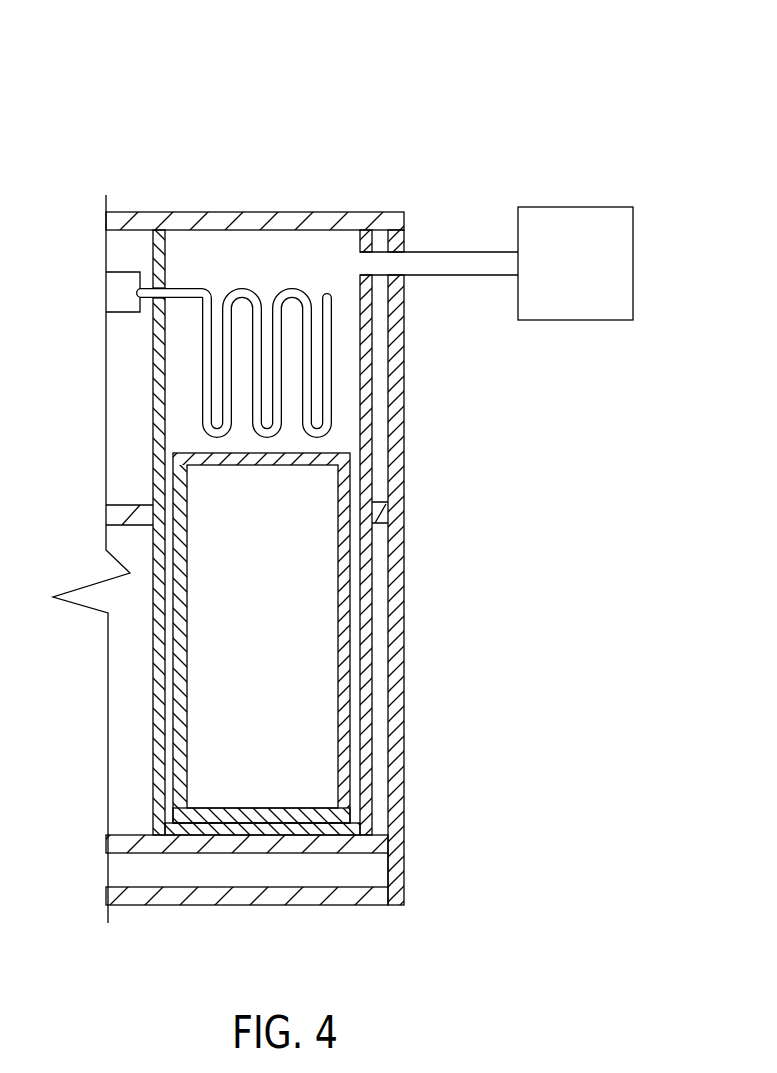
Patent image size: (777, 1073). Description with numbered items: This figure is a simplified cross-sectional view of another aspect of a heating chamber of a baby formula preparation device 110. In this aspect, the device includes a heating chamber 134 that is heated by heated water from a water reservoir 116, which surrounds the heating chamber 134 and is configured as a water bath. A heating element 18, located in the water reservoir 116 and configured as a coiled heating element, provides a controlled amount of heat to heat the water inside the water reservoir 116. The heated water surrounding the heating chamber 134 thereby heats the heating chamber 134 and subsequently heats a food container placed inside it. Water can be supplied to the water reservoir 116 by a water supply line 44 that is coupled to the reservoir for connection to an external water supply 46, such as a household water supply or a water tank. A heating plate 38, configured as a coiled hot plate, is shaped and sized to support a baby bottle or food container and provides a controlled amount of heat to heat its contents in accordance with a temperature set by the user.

The baby formula preparation device 110 is at (147, 109).
The heating element 18 is at (125, 284).
The water supply line 44 is at (452, 252).
The external water supply 46 is at (562, 207).
The water reservoir 116 is at (372, 390).
The heating chamber 134 is at (350, 630).
The heating plate 38 is at (272, 808).